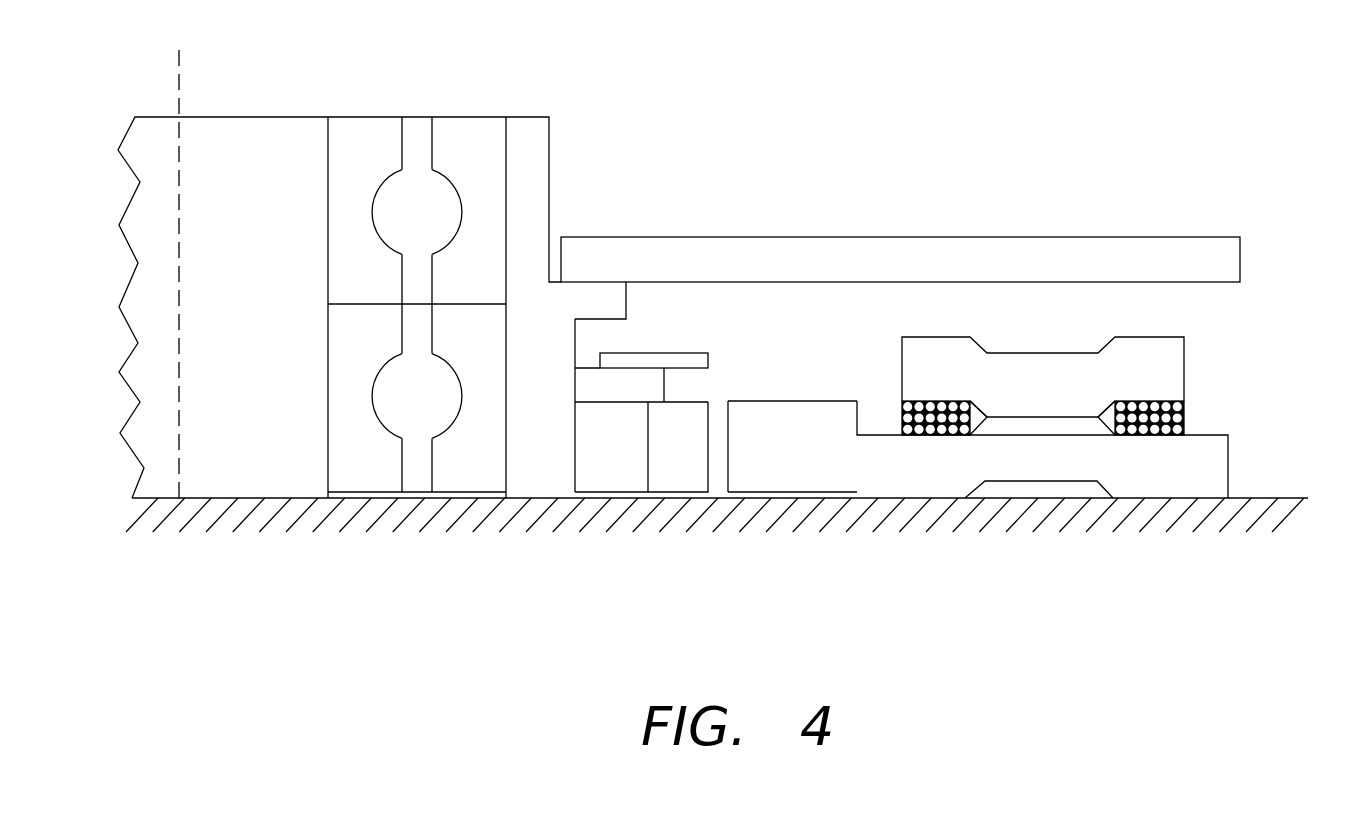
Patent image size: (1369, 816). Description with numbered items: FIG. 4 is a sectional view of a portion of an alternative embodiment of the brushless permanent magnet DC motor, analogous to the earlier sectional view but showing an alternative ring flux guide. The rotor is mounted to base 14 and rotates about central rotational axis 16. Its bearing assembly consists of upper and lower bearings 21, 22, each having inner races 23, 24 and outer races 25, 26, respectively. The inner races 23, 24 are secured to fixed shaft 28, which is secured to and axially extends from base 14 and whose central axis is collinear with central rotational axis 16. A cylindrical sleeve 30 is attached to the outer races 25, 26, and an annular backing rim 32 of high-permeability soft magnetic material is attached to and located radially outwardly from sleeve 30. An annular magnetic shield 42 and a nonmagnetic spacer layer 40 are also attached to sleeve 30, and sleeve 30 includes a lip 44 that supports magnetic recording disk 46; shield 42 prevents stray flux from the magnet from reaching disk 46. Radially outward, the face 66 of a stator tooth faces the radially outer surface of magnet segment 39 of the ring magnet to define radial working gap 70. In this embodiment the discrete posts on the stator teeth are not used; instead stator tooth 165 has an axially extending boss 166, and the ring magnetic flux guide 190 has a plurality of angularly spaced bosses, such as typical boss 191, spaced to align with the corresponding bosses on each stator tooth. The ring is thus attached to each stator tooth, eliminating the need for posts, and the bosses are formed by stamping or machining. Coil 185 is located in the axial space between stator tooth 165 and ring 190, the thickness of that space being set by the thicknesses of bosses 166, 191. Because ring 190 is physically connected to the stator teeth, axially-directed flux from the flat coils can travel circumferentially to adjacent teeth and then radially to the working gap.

The base 14 is at (1290, 498).
The central rotational axis 16 is at (179, 62).
The upper bearing 21 is at (418, 175).
The lower bearing 22 is at (440, 405).
The inner race 23 is at (365, 140).
The inner race 24 is at (350, 457).
The outer race 25 is at (485, 135).
The outer race 26 is at (490, 470).
The fixed shaft 28 is at (275, 160).
The cylindrical sleeve 30 is at (527, 135).
The annular backing rim 32 is at (590, 482).
The magnet segment 39 is at (673, 482).
The spacer layer 40 is at (645, 383).
The annular magnetic shield 42 is at (692, 353).
The lip 44 is at (610, 292).
The magnetic recording disk 46 is at (908, 253).
The face 66 is at (728, 395).
The radial working gap 70 is at (725, 437).
The stator tooth 165 is at (1218, 458).
The axially extending boss 166 is at (1108, 437).
The coil 185 is at (1183, 415).
The ring magnetic flux guide 190 is at (1168, 367).
The boss 191 is at (982, 423).